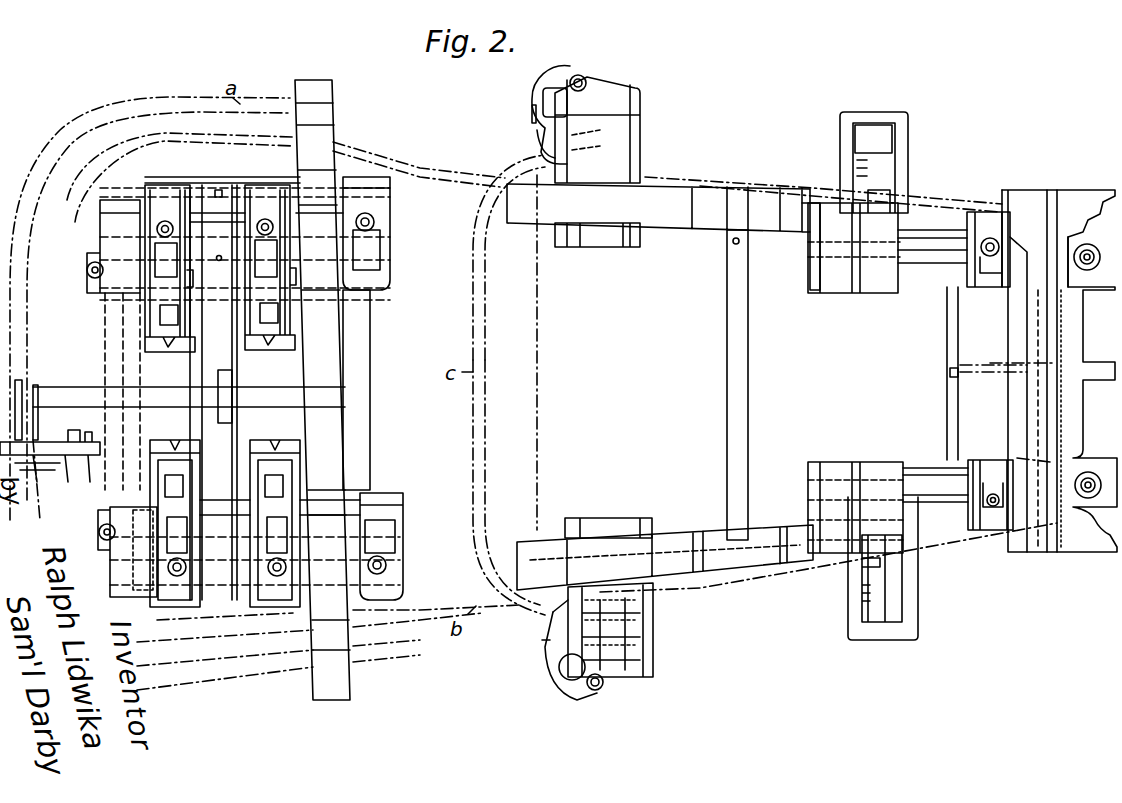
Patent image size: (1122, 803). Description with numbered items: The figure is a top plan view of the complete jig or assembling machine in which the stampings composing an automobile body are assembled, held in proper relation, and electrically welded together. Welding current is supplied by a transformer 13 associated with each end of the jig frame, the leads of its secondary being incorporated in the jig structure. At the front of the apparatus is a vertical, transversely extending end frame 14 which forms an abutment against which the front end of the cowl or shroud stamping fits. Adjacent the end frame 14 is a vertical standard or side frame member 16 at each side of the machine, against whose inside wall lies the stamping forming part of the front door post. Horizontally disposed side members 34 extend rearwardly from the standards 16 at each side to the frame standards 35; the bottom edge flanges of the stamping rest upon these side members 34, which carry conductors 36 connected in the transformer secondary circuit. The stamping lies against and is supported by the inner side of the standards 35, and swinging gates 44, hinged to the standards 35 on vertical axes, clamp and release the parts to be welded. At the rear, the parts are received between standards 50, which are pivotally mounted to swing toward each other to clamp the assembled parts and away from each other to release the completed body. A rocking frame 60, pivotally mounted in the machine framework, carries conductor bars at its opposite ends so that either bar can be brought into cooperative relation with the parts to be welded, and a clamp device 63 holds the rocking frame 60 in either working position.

The transformer 13 is at (66, 468).
The end frame 14 is at (1068, 331).
The standard or side frame member 16 is at (882, 182).
The side member 34 is at (800, 227).
The frame standard 35 is at (622, 150).
The conductor 36 is at (692, 566).
The swinging gate 44 is at (535, 104).
The standard 50 is at (378, 248).
The rocking frame 60 is at (178, 310).
The clamp device 63 is at (167, 220).